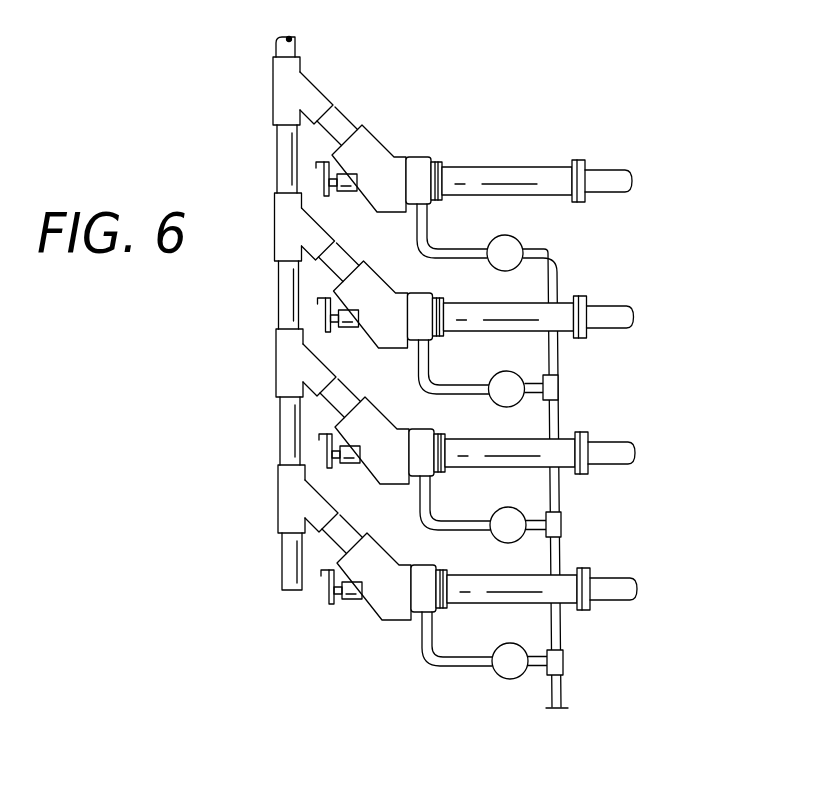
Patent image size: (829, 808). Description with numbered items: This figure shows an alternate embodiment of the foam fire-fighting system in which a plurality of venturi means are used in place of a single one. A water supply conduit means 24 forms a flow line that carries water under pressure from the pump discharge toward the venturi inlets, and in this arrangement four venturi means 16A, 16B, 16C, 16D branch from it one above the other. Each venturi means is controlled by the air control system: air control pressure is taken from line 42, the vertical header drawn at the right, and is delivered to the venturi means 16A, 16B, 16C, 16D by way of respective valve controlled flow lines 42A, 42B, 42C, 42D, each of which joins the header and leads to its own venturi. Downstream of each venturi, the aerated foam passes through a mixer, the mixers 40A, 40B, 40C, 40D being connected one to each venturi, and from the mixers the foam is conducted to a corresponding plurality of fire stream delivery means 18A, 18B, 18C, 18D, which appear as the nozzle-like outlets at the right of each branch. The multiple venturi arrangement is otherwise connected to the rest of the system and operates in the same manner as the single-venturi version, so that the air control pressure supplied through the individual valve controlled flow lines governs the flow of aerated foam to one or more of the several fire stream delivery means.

The water supply conduit means 24 is at (295, 50).
The venturi means 16A is at (387, 602).
The venturi means 16B is at (388, 455).
The venturi means 16C is at (388, 320).
The venturi means 16D is at (384, 181).
The mixer 40A is at (492, 590).
The mixer 40B is at (472, 453).
The mixer 40C is at (478, 313).
The mixer 40D is at (538, 170).
The fire stream delivery means 18A is at (634, 581).
The fire stream delivery means 18B is at (632, 444).
The fire stream delivery means 18C is at (626, 309).
The fire stream delivery means 18D is at (624, 173).
The valve controlled flow line 42A is at (444, 672).
The valve controlled flow line 42B is at (453, 528).
The valve controlled flow line 42C is at (443, 391).
The valve controlled flow line 42D is at (476, 247).
The air control pressure line 42 is at (563, 690).